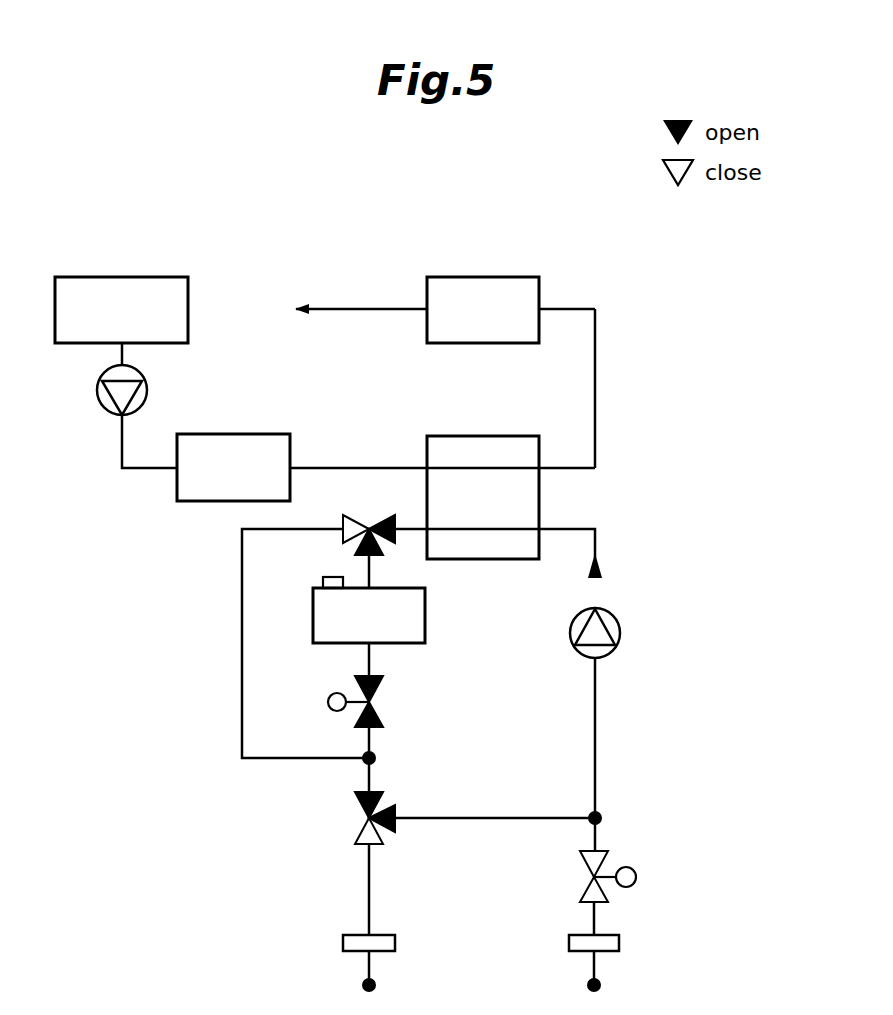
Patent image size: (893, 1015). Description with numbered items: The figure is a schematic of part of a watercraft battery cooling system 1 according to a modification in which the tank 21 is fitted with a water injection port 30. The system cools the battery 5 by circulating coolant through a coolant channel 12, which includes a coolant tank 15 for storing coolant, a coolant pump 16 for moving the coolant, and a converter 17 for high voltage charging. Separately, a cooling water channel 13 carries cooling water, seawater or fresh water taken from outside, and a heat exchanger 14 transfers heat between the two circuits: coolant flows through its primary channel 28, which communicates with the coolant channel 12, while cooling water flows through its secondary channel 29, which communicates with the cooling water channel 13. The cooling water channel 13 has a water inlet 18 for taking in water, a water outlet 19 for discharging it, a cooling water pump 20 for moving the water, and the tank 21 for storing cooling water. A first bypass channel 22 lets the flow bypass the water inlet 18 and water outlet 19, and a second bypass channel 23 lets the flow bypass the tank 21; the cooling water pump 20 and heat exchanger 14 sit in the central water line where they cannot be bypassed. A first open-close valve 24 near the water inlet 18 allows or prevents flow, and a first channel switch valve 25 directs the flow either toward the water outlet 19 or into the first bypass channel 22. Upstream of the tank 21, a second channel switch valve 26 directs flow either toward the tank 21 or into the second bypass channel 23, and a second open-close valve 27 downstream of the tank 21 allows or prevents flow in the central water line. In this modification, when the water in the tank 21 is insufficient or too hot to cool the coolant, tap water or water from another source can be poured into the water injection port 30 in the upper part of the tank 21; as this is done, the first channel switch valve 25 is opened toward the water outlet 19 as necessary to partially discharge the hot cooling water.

The watercraft battery cooling system 1 is at (150, 192).
The battery 5 is at (485, 277).
The coolant channel 12 is at (602, 347).
The cooling water channel 13 is at (602, 731).
The heat exchanger 14 is at (545, 489).
The coolant tank 15 is at (135, 277).
The coolant pump 16 is at (98, 392).
The converter 17 is at (238, 434).
The water inlet 18 is at (610, 935).
The water outlet 19 is at (357, 935).
The cooling water pump 20 is at (617, 621).
The tank 21 is at (425, 608).
The first bypass channel 22 is at (468, 820).
The second bypass channel 23 is at (242, 645).
The first open-close valve 24 is at (583, 860).
The first channel switch valve 25 is at (358, 806).
The second channel switch valve 26 is at (352, 512).
The second open-close valve 27 is at (377, 690).
The primary channel 28 is at (493, 468).
The secondary channel 29 is at (498, 530).
The water injection port 30 is at (322, 581).